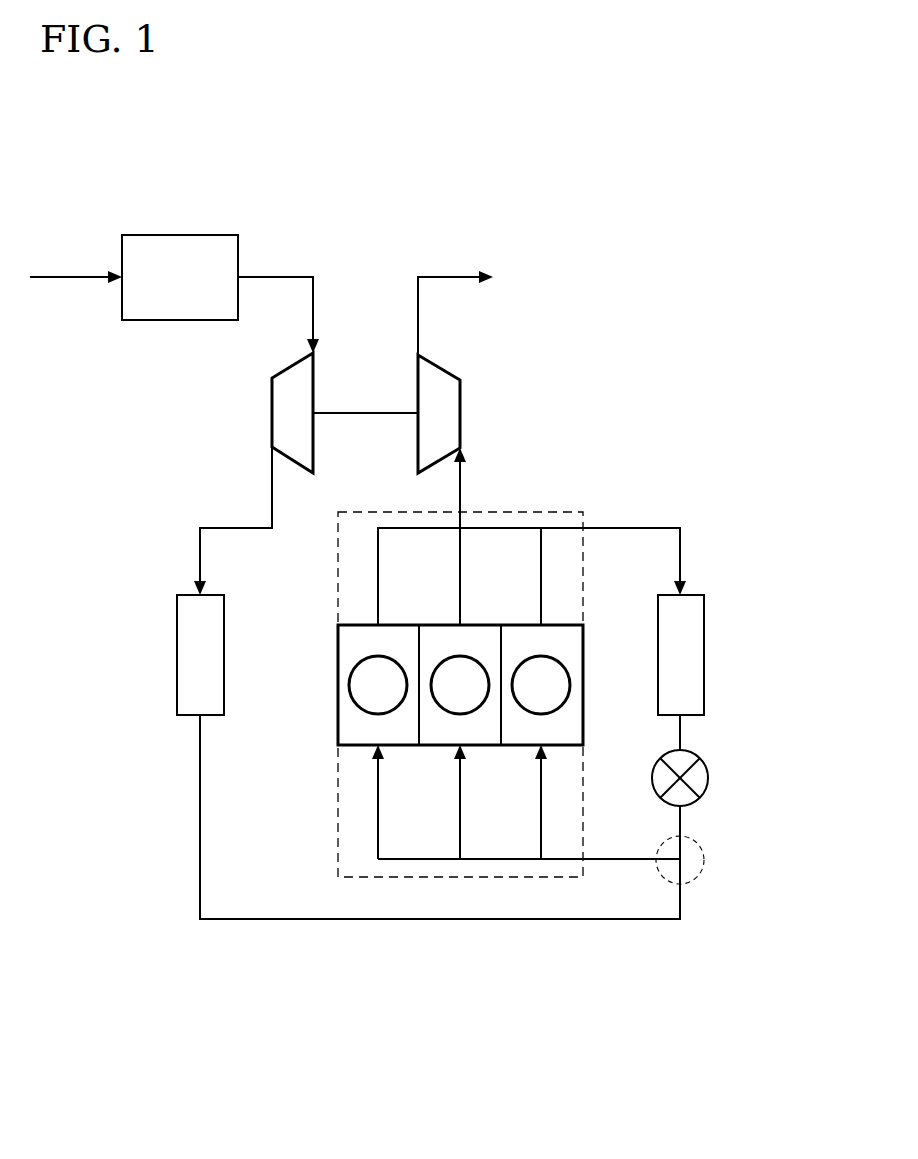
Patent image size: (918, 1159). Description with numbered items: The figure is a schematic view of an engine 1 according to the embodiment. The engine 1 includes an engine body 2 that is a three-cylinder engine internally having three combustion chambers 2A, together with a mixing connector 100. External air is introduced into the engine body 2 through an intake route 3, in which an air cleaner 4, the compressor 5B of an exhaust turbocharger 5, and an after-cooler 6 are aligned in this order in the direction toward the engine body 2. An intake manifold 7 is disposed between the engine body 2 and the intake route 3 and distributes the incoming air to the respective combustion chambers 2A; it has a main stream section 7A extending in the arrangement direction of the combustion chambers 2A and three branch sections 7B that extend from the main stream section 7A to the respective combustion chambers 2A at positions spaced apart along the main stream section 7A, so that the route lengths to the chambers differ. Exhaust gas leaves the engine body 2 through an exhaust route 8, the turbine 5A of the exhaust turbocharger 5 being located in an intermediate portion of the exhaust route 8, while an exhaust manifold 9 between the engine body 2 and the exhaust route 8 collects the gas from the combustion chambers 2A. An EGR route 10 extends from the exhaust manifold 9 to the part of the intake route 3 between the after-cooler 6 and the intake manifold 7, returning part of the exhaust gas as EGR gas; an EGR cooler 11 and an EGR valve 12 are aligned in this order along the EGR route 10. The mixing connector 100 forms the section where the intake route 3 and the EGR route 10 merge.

The engine 1 is at (662, 181).
The engine body 2 is at (425, 686).
The combustion chamber 2A is at (362, 712).
The intake route 3 is at (595, 919).
The air cleaner 4 is at (180, 235).
The exhaust turbocharger 5 is at (373, 372).
The turbine 5A is at (447, 417).
The compressor 5B is at (286, 412).
The after-cooler 6 is at (177, 667).
The intake manifold 7 is at (477, 856).
The main stream section 7A is at (502, 862).
The branch section 7B is at (377, 818).
The exhaust route 8 is at (463, 493).
The exhaust manifold 9 is at (567, 512).
The EGR route 10 is at (683, 550).
The EGR cooler 11 is at (706, 653).
The EGR valve 12 is at (709, 775).
The mixing connector 100 is at (705, 855).